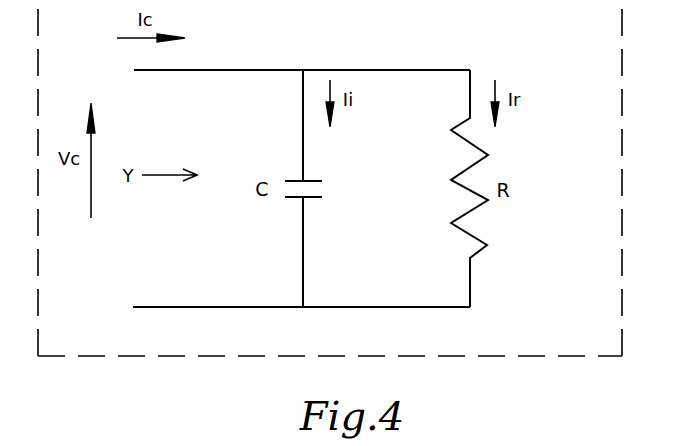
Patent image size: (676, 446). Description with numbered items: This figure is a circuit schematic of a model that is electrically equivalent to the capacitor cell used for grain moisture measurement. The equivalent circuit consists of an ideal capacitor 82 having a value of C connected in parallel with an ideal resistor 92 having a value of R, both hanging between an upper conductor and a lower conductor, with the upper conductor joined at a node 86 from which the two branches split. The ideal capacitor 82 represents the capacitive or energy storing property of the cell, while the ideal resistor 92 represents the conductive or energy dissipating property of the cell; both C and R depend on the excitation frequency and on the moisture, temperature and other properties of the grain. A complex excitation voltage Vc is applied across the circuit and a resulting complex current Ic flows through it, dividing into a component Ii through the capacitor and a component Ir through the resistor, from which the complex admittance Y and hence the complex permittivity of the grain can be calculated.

The node (top conductor) 86 is at (303, 70).
The ideal capacitor 82 is at (309, 200).
The ideal resistor 92 is at (470, 185).